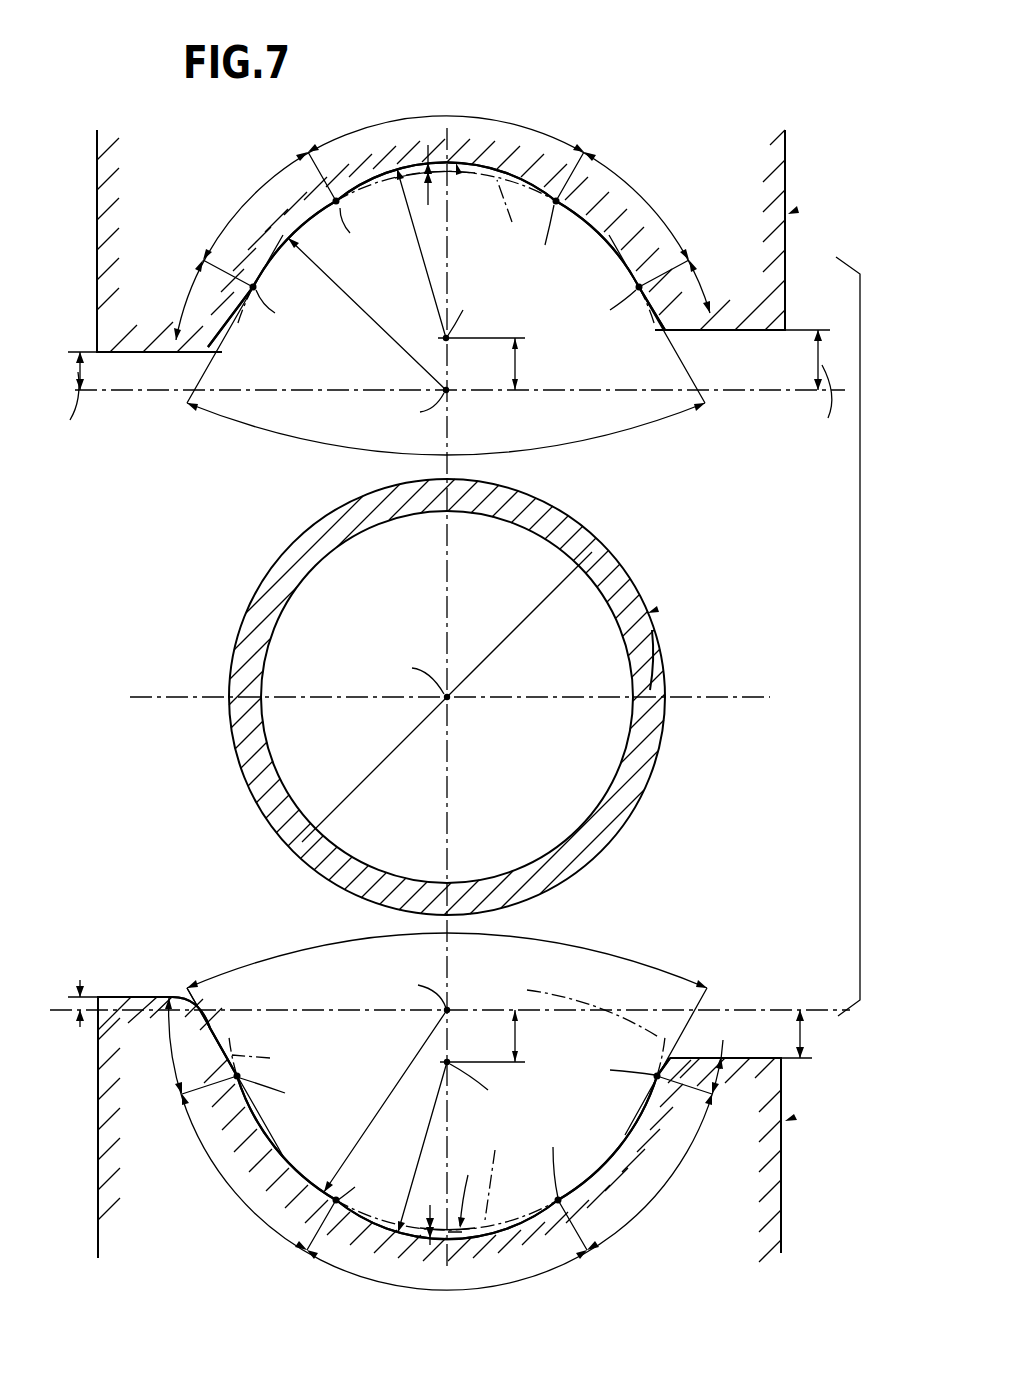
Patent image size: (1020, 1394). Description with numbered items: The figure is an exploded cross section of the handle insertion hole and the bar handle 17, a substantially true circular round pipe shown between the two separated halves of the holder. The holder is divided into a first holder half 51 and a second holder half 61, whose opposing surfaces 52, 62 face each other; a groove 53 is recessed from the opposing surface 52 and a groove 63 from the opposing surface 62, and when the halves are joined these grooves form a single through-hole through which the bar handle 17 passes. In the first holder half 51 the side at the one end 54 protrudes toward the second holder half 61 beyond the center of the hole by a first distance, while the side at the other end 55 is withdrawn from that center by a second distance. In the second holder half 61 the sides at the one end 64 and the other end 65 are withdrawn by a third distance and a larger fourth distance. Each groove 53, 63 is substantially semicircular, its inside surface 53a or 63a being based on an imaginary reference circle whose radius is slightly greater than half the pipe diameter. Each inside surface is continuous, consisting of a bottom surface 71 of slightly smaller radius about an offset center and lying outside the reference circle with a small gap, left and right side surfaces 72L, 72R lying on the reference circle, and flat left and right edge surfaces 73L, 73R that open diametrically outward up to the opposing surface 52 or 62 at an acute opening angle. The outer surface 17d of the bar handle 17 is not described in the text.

The bar handle 17 is at (650, 612).
The outer peripheral surface of journal 17d is at (663, 660).
The first holder half 51 is at (790, 1120).
The opposing surface 52 is at (140, 997).
The groove 53 is at (435, 1109).
The inside surface 53a is at (222, 993).
The one end 54 is at (135, 1220).
The other end 55 is at (782, 1213).
The second holder half 61 is at (790, 213).
The opposing surface 62 is at (130, 354).
The groove 63 is at (444, 271).
The inside surface 63a is at (237, 345).
The one end 64 is at (133, 180).
The other end 65 is at (786, 158).
The bottom surface 71 is at (456, 165).
The left side surface 72L is at (268, 265).
The right side surface 72R is at (588, 226).
The left edge surface 73L is at (228, 340).
The right edge surface 73R is at (650, 310).